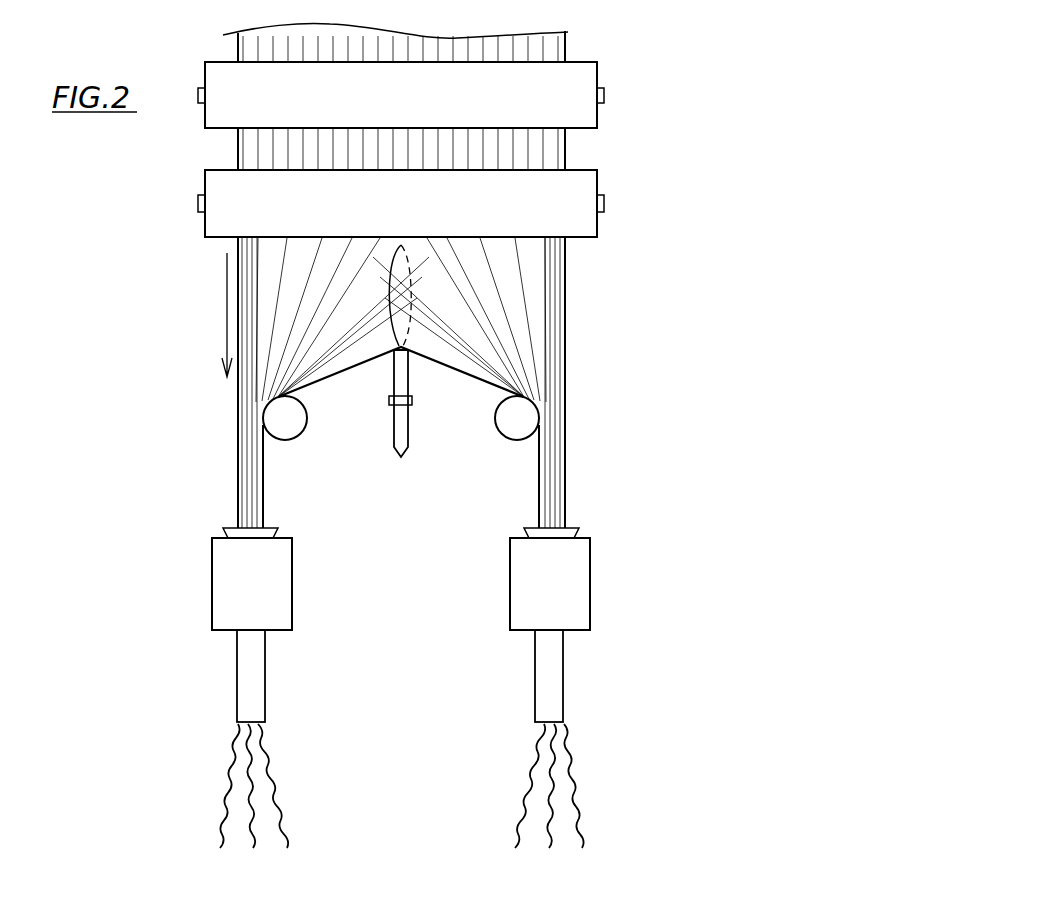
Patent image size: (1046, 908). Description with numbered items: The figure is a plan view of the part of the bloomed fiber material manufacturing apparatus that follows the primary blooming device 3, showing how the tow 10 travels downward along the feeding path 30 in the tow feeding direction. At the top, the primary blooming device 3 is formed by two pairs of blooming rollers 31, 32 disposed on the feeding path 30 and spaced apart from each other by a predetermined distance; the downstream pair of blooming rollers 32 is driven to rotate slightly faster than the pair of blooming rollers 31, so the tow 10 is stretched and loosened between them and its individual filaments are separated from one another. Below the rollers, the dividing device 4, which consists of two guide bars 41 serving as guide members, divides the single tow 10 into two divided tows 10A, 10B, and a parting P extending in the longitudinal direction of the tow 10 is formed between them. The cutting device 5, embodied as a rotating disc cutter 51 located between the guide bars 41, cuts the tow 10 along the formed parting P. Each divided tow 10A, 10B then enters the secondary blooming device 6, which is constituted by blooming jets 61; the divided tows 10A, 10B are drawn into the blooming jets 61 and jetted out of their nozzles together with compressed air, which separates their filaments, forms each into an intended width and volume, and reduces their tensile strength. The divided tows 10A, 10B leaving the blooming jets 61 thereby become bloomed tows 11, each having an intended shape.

The primary blooming device 3 is at (662, 120).
The pair of blooming rollers 31 is at (597, 75).
The pair of blooming rollers 32 is at (597, 185).
The tow 10 is at (565, 258).
The feeding path 30 is at (227, 305).
The parting P is at (411, 295).
The dividing device 4 is at (318, 447).
The guide bar 41 is at (275, 425).
The cutting device 5 is at (415, 457).
The disc cutter 51 is at (408, 432).
The divided tow 10A is at (238, 482).
The divided tow 10B is at (565, 487).
The secondary blooming device 6 is at (408, 625).
The blooming jet 61 is at (212, 598).
The bloomed tow 11 is at (227, 775).